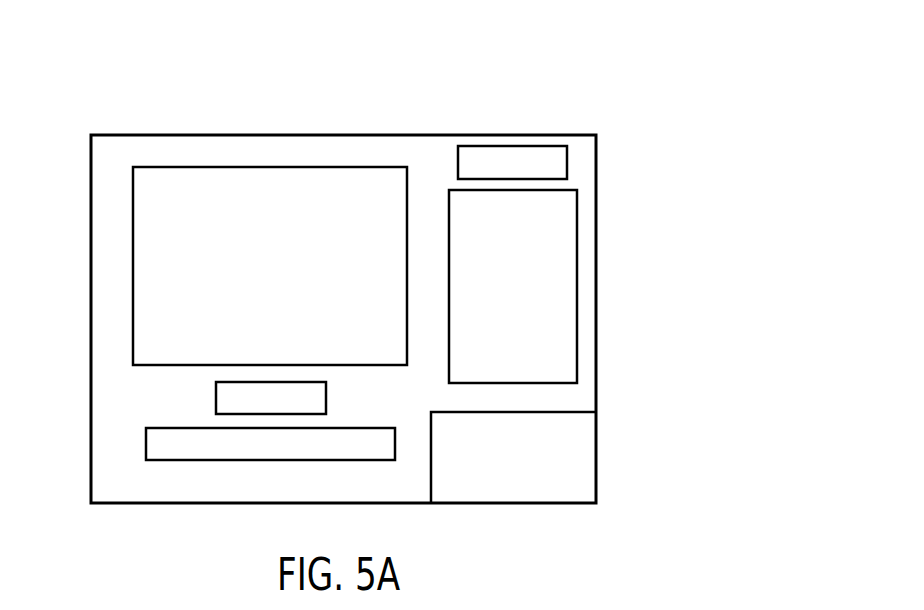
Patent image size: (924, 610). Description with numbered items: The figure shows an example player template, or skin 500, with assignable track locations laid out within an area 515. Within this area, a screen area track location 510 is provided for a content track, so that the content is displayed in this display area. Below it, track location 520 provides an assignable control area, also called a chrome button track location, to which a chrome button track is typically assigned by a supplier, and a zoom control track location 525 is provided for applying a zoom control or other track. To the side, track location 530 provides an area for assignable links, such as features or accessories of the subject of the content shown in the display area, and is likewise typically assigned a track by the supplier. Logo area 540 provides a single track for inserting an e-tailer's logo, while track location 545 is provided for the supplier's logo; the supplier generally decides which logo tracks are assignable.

The skin 500 is at (342, 273).
The screen area track location 510 is at (340, 356).
The area 515 is at (431, 170).
The supplier's logo track location 545 is at (514, 156).
The assignable links track location 530 is at (573, 195).
The zoom control track location 525 is at (198, 402).
The chrome button track location 520 is at (215, 475).
The logo area 540 is at (577, 493).